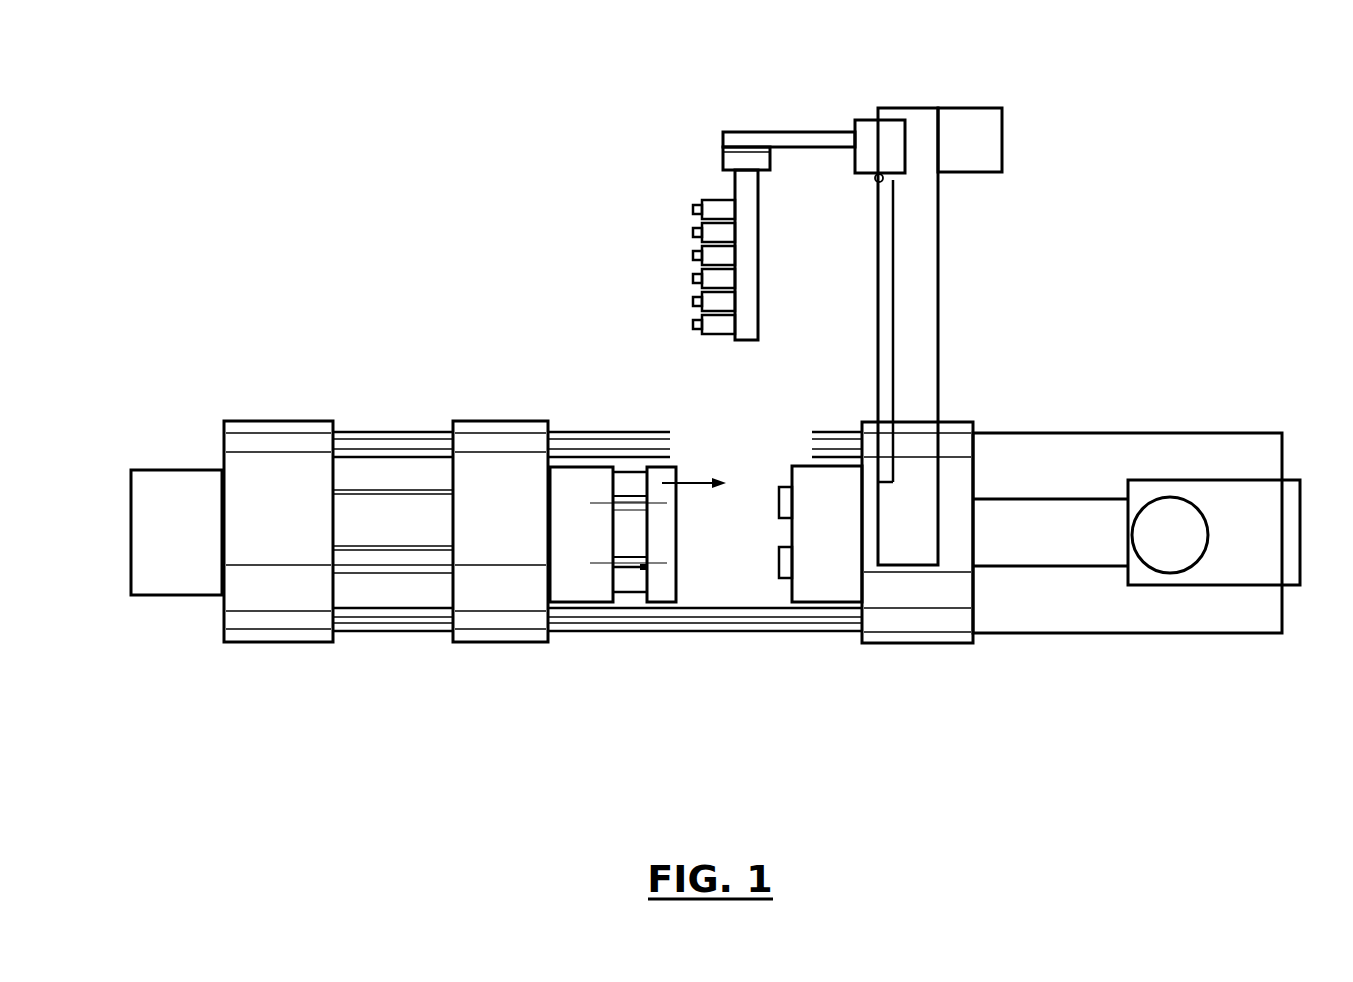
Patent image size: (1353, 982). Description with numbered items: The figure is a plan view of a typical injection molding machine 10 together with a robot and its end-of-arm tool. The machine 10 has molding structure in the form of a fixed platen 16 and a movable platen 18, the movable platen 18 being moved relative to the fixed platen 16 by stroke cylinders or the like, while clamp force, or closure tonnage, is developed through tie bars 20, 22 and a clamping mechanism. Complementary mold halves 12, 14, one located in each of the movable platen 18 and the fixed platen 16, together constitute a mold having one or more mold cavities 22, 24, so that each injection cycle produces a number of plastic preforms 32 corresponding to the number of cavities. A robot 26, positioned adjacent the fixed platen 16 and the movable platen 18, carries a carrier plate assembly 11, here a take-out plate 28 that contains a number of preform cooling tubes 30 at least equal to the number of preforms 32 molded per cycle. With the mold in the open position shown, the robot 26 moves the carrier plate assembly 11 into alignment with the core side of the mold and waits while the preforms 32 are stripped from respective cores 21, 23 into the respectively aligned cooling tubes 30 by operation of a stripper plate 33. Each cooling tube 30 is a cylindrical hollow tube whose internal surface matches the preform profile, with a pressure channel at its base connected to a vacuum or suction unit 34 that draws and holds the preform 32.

The injection molding machine 10 is at (465, 111).
The carrier plate assembly 11 is at (776, 216).
The mold half 12 is at (812, 588).
The mold half 14 is at (585, 585).
The fixed platen 16 is at (917, 623).
The movable platen 18 is at (502, 428).
The tie bar 20 is at (605, 430).
The core 21 is at (633, 503).
The tie bar 22 is at (779, 495).
The core 23 is at (644, 567).
The mold cavity 24 is at (777, 565).
The robot 26 is at (867, 120).
The take-out plate 28 is at (752, 285).
The preform cooling tube 30 is at (706, 200).
The preform 32 is at (692, 228).
The stripper plate 33 is at (672, 513).
The vacuum or suction unit 34 is at (993, 130).